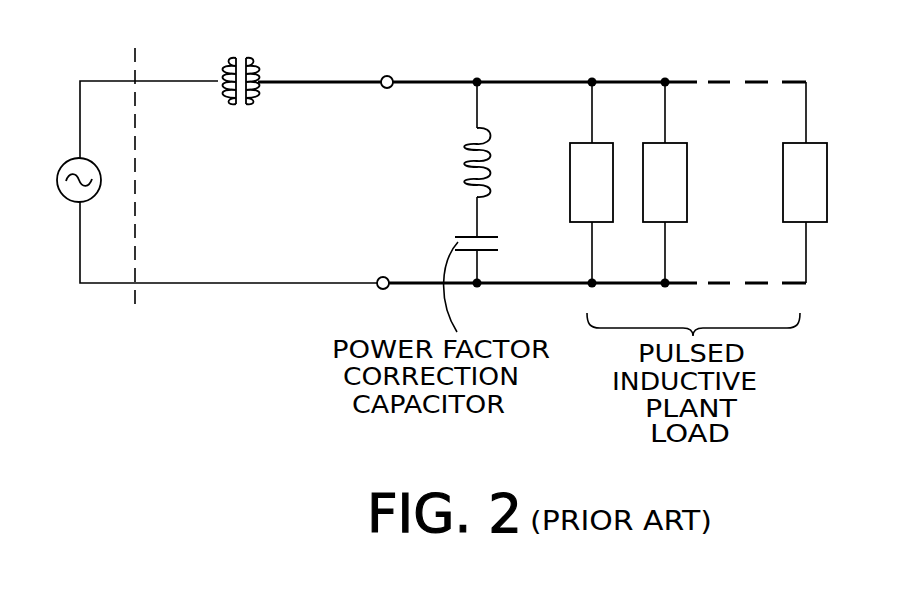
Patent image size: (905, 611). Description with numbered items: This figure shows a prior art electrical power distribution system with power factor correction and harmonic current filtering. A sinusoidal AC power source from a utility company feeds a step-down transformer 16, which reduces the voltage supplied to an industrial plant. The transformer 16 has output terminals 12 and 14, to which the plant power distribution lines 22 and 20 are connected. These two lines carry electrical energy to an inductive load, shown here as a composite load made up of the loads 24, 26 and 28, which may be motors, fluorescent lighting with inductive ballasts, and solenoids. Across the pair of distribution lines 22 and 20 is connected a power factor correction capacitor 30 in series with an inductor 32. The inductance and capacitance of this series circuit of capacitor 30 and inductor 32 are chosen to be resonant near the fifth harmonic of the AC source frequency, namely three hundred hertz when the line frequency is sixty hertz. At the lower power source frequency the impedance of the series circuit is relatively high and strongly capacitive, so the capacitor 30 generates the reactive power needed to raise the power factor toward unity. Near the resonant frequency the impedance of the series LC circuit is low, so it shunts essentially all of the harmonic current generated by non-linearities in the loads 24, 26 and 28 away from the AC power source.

The output terminal 12 is at (380, 79).
The output terminal 14 is at (376, 291).
The step-down transformer 16 is at (219, 73).
The power distribution line 20 is at (548, 288).
The power distribution line 22 is at (562, 78).
The load 24 is at (609, 197).
The load 26 is at (682, 197).
The load 28 is at (822, 197).
The power factor correction capacitor 30 is at (500, 245).
The inductor 32 is at (462, 170).